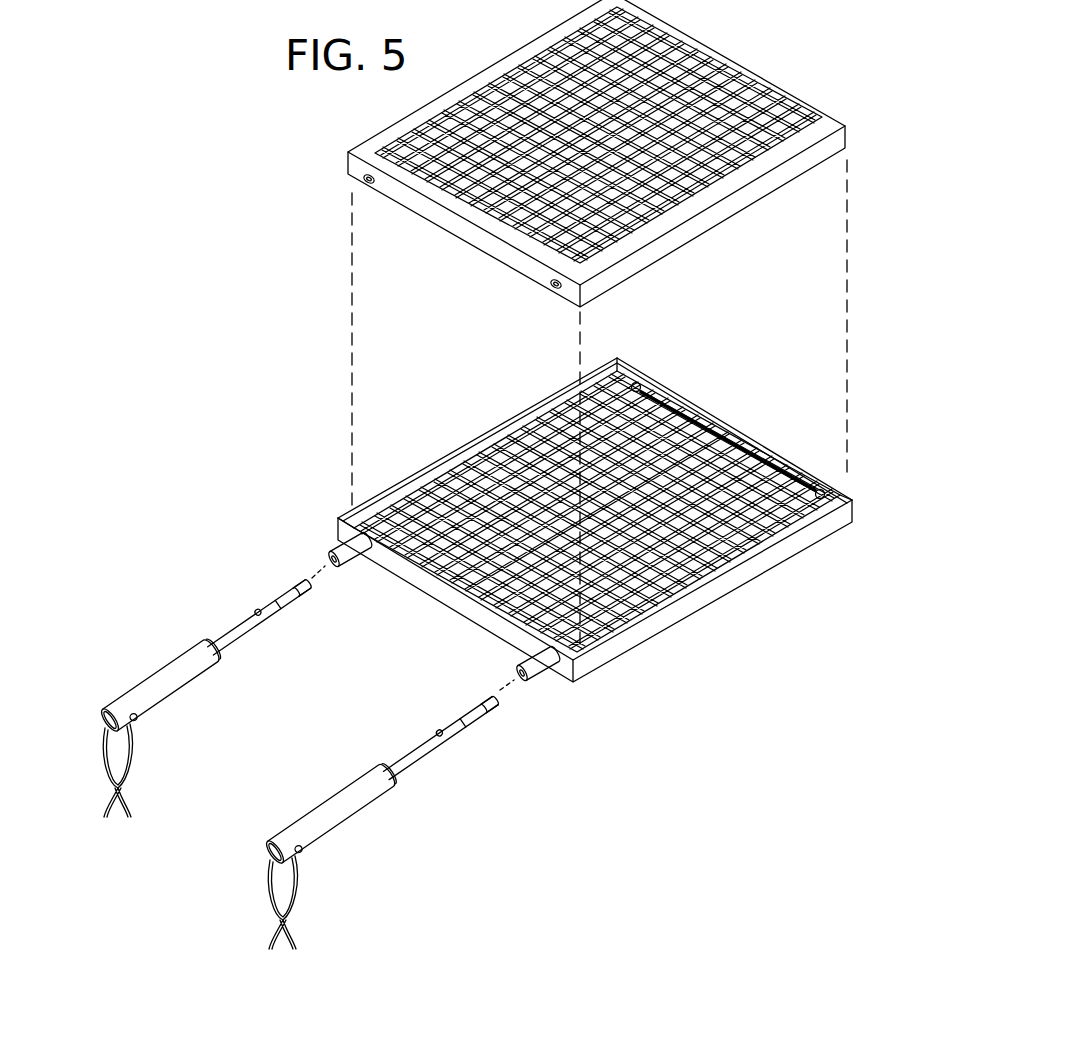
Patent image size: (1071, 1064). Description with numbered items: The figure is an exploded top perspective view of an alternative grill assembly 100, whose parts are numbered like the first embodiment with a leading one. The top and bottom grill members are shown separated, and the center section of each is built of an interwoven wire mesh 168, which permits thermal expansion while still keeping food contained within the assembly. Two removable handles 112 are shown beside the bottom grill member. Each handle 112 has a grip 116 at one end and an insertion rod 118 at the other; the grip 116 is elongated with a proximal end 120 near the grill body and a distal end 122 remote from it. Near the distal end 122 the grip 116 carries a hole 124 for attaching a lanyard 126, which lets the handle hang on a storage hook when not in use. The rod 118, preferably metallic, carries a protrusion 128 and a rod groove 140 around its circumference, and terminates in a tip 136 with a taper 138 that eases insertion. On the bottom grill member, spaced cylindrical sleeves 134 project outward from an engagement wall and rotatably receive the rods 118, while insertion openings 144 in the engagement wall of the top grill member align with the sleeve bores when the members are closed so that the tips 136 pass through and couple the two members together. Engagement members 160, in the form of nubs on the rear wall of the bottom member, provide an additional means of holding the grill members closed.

The grill assembly 100 is at (135, 222).
The handle 112 is at (290, 742).
The grip 116 is at (155, 678).
The insertion rod 118 is at (235, 630).
The proximal end 120 is at (212, 648).
The distal end 122 is at (97, 712).
The hole 124 is at (140, 717).
The lanyard 126 is at (95, 758).
The protrusion 128 is at (263, 620).
The cylindrical sleeve 134 is at (340, 548).
The tip 136 is at (310, 582).
The taper 138 is at (308, 592).
The rod groove 140 is at (277, 592).
The insertion opening 144 is at (364, 181).
The engagement member 160 is at (640, 383).
The interwoven wire mesh 168 is at (657, 62).